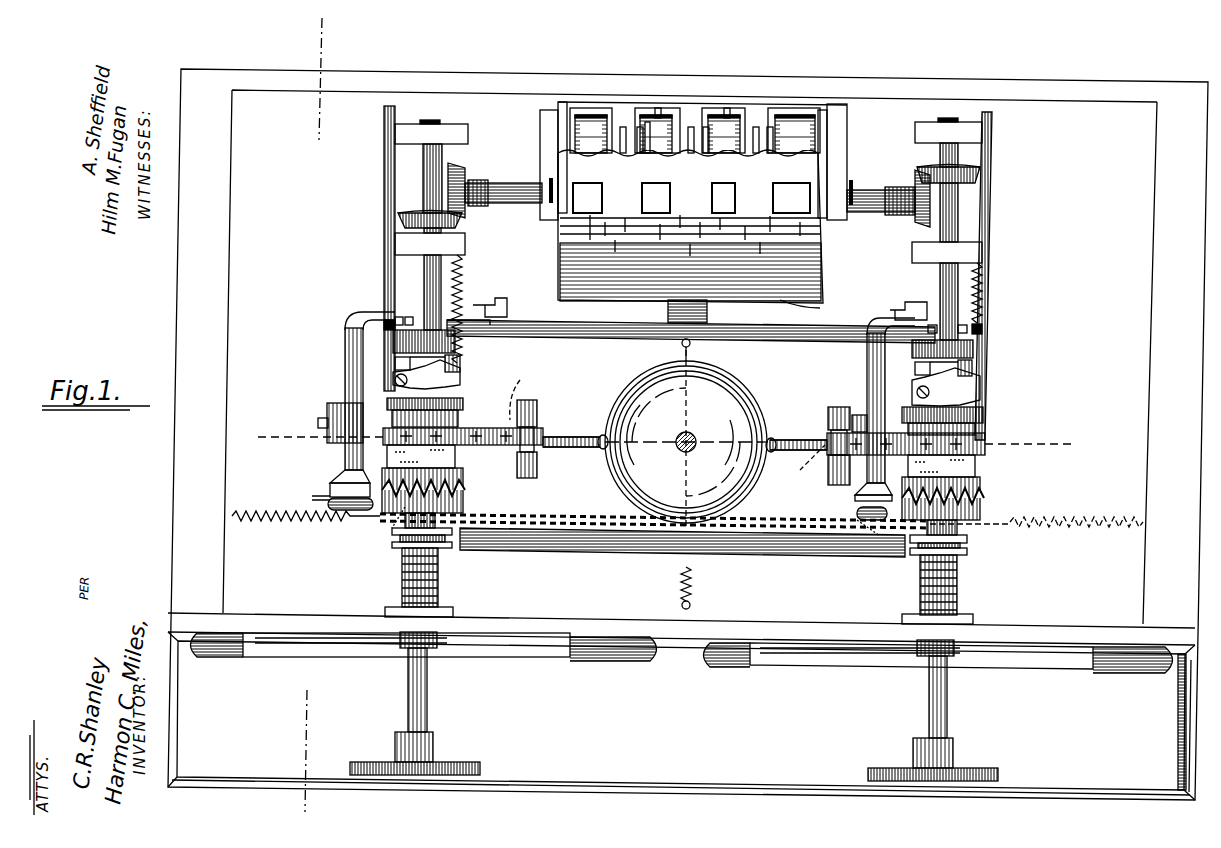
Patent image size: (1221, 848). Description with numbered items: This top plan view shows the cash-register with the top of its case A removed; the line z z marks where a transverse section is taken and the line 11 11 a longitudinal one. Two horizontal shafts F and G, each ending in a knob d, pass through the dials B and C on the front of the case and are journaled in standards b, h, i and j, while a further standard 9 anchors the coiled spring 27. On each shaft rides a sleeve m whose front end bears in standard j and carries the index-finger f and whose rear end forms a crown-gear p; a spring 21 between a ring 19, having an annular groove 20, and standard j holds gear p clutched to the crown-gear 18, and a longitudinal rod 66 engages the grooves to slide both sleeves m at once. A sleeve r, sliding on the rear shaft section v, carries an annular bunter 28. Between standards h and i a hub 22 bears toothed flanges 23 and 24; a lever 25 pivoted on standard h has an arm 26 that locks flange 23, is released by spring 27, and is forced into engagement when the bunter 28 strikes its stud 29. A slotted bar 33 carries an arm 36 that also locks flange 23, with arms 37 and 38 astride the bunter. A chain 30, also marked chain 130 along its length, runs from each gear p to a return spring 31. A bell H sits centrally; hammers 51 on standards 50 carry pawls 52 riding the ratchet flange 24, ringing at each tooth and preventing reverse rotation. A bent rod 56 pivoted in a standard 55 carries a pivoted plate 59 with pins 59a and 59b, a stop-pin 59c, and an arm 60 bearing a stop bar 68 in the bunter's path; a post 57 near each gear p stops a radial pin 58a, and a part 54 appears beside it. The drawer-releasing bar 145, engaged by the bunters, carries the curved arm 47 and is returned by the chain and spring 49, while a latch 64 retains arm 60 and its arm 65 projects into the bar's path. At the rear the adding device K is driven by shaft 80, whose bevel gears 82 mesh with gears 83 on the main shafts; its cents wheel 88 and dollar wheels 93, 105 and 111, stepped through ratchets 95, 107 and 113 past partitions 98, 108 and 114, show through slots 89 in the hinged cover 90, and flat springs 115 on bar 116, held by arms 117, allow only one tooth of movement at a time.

The case A is at (181, 286).
The adding device K is at (825, 245).
The bell H is at (631, 382).
The dial B is at (560, 660).
The dial C is at (814, 667).
The rotating shaft F is at (428, 694).
The shaft G is at (948, 702).
The knob or hand-wheel d is at (480, 762).
The index-finger f is at (346, 643).
The section line z is at (321, 415).
The standard b is at (470, 128).
The rear section of shaft v is at (444, 165).
The standard h is at (345, 370).
The standard i is at (458, 466).
The crown-gear p is at (465, 504).
The sleeve m is at (440, 577).
The standard j is at (455, 610).
The sleeve r is at (462, 365).
The bearing block 9 is at (466, 245).
The section line 11 is at (671, 439).
The crown-gear 18 is at (465, 488).
The ring 19 is at (392, 546).
The annular groove 20 is at (392, 532).
The coiled spring 21 is at (402, 590).
The short sleeve or hub 22 is at (460, 419).
The toothed flange 23 is at (465, 404).
The toothed flange 24 is at (383, 446).
The lever 25 is at (686, 383).
The arm 26 is at (462, 392).
The coiled spring 27 is at (463, 290).
The annular flange or bunter 28 is at (393, 335).
The stud 29 is at (460, 380).
The chain 30 is at (775, 520).
The coiled spring 31 is at (258, 508).
The bar 33 is at (383, 224).
The upwardly-projecting arm 36 is at (328, 410).
The vertical arm 37 is at (385, 318).
The arm 38 is at (395, 360).
The cross bar 145 is at (606, 332).
The curved arm 47 is at (708, 313).
The chain and spring 49 is at (692, 345).
The standard 50 is at (538, 462).
The hammer 51 is at (575, 432).
The retaining-pawl 52 is at (667, 424).
The pin 54 is at (307, 503).
The vertical standard 55 is at (318, 420).
The bent rod 56 is at (345, 380).
The post 57 is at (795, 437).
The pin 58a is at (395, 530).
The pivoted plate 59 is at (328, 500).
The forwardly-projecting pin 59a is at (370, 510).
The stop-pin 59b is at (338, 483).
The stop-pin 59c is at (332, 510).
The arm 60 is at (345, 312).
The head or latch 64 is at (498, 316).
The arm 65 is at (508, 300).
The rod 66 is at (600, 557).
The vertically-arranged bar 68 is at (406, 312).
The horizontal shaft 80 is at (519, 181).
The beveled gear 82 is at (466, 180).
The beveled gear 83 is at (400, 215).
The circular block or wheel 88 is at (822, 115).
The slot 89 is at (812, 190).
The cap-plate or cover 90 is at (811, 309).
The wheel 93 is at (750, 120).
The ratchet 95 is at (769, 130).
The circular partition-plate 98 is at (793, 117).
The wheel 105 is at (660, 115).
The ratchet 107 is at (705, 130).
The circular partition 108 is at (733, 115).
The wheel 111 is at (578, 117).
The ratchet 113 is at (629, 130).
The circular partition 114 is at (647, 125).
The flat tension-spring 115 is at (617, 130).
The bar 116 is at (565, 107).
The arm 117 is at (845, 120).
The chain 130 is at (562, 506).